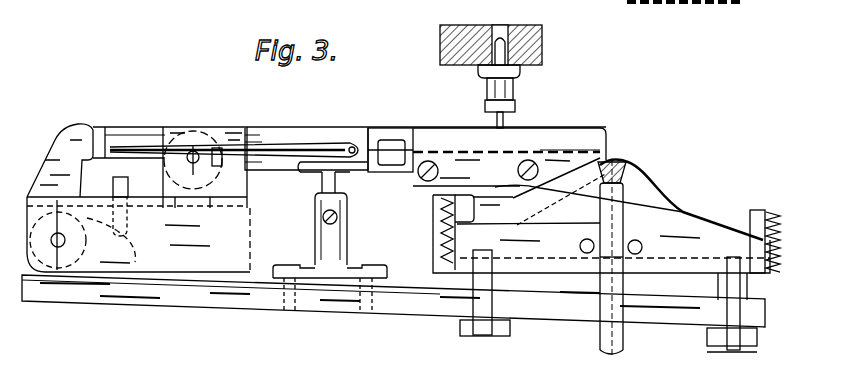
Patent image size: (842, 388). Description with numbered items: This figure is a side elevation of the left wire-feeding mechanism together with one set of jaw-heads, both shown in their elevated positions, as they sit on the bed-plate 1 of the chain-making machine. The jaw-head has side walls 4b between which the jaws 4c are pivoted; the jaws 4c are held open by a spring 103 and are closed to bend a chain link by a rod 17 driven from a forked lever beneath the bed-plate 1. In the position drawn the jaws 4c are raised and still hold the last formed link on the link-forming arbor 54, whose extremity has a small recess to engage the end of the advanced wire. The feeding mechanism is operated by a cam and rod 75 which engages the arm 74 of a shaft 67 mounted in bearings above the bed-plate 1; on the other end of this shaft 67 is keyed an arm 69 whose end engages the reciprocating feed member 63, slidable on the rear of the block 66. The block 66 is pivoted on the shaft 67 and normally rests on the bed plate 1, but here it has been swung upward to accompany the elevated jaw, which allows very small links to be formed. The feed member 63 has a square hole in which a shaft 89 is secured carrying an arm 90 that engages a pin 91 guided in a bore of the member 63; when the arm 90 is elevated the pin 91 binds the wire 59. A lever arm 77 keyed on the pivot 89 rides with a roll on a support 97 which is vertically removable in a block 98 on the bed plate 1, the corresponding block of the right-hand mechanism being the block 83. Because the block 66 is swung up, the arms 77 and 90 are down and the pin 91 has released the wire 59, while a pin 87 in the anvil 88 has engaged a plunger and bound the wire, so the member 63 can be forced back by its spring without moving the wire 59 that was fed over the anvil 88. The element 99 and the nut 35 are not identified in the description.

The bed-plate 1 is at (541, 38).
The arm 69 is at (82, 135).
The wire 59 is at (148, 146).
The feed member 63 is at (170, 130).
The shaft 89 is at (190, 148).
The arm 90 is at (193, 180).
The pin 91 is at (217, 143).
The rod 75 is at (128, 190).
The shaft 67 is at (62, 238).
The arm 74 is at (135, 247).
The lever arm 77 is at (308, 145).
The block 66 is at (325, 128).
The bracket 99 is at (402, 135).
The pin 87 is at (497, 127).
The nut 35 is at (515, 106).
The block 83 is at (545, 150).
The anvil 88 is at (416, 184).
The support 97 is at (319, 170).
The block 98 is at (338, 227).
The link-forming arbor 54 is at (621, 160).
The jaws 4c is at (645, 190).
The side walls 4b is at (700, 225).
The spring 103 is at (778, 251).
The rod 17 is at (742, 350).